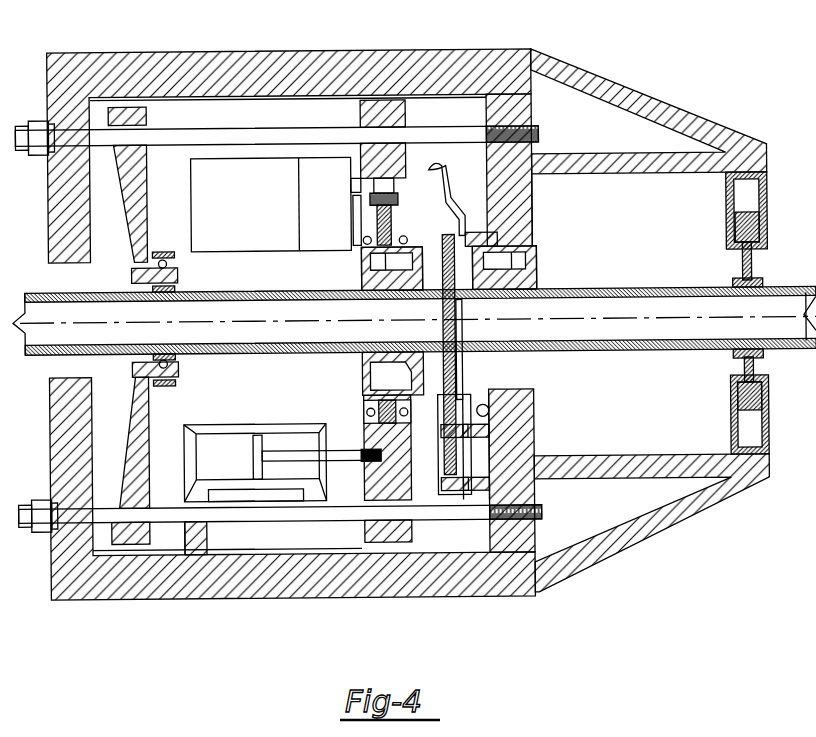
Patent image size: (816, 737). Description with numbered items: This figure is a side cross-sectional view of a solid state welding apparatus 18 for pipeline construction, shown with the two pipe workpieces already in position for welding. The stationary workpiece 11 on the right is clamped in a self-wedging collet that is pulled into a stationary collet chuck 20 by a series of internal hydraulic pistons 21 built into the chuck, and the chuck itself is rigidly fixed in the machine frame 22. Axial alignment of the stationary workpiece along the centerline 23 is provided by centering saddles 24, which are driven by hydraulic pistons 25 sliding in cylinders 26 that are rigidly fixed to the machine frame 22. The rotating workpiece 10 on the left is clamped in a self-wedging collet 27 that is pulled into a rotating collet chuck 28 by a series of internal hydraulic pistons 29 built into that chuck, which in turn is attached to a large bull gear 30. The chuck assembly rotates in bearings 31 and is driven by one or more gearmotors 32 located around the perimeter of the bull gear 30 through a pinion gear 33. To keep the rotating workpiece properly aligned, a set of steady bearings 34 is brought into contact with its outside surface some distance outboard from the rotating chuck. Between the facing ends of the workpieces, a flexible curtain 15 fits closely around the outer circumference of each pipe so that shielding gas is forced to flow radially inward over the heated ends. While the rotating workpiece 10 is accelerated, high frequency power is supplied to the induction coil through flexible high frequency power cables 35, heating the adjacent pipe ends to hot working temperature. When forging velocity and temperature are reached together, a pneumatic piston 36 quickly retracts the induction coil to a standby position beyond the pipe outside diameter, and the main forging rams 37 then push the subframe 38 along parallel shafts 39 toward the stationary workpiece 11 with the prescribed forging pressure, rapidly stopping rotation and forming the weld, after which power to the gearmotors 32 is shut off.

The rotating workpiece 10 is at (378, 343).
The stationary workpiece 11 is at (584, 292).
The flexible curtain 15 is at (438, 250).
The apparatus 18 is at (612, 82).
The stationary collet chuck 20 is at (537, 278).
The internal hydraulic pistons 21 is at (537, 252).
The machine frame 22 is at (537, 198).
The centerline 23 is at (785, 356).
The centering saddles 24 is at (735, 283).
The hydraulic pistons 25 is at (742, 210).
The cylinders 26 is at (727, 194).
The self-wedging collet 27 is at (419, 298).
The rotating collet chuck 28 is at (364, 270).
The internal hydraulic pistons 29 is at (372, 266).
The bull gear 30 is at (367, 222).
The bearings 31 is at (400, 385).
The gearmotors 32 is at (259, 210).
The pinion gear 33 is at (400, 190).
The steady bearings 34 is at (168, 252).
The high frequency power cables 35 is at (472, 372).
The pneumatic piston 36 is at (440, 458).
The main forging rams 37 is at (237, 450).
The subframe 38 is at (362, 408).
The parallel shafts 39 is at (172, 502).